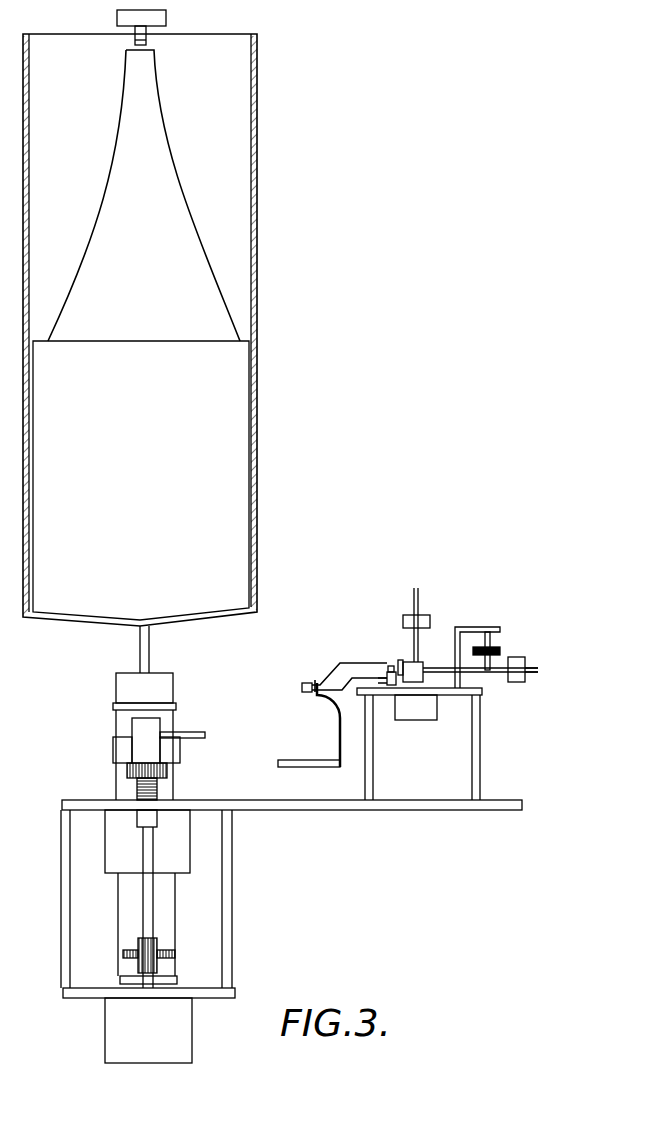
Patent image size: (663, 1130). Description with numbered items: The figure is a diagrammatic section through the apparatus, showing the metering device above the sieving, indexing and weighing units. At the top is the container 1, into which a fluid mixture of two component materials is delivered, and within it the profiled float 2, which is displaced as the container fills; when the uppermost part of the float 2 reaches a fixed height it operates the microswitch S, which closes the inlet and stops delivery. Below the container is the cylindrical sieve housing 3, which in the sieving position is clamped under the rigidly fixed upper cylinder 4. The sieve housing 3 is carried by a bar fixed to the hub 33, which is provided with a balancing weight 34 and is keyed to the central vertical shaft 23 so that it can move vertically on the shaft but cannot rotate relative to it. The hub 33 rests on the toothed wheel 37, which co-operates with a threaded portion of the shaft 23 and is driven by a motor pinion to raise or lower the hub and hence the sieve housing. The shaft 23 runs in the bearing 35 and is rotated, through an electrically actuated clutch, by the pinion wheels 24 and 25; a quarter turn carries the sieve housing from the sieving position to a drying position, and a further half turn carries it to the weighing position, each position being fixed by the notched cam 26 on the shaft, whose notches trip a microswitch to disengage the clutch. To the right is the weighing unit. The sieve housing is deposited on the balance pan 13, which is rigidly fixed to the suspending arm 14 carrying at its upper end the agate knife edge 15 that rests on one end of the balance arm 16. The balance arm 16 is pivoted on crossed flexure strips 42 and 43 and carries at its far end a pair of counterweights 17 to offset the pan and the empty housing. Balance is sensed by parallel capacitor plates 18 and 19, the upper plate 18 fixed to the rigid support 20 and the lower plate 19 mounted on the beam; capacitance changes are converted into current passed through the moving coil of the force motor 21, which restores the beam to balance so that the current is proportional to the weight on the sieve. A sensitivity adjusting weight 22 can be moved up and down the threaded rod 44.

The container 1 is at (258, 193).
The float 2 is at (168, 143).
The microswitch S is at (152, 37).
The upper cylinder 4 is at (125, 687).
The sieve housing 3 is at (170, 717).
The balancing weight 34 is at (140, 728).
The hub 33 is at (167, 748).
The toothed wheel 37 is at (125, 770).
The bearing 35 is at (137, 820).
The central vertical shaft 23 is at (150, 910).
The pinion wheel 24 is at (157, 943).
The pinion wheel 25 is at (173, 953).
The notched cam 26 is at (122, 982).
The balance pan 13 is at (293, 767).
The suspending arm 14 is at (340, 730).
The agate knife edge 15 is at (313, 683).
The balance arm 16 is at (346, 668).
The force motor 21 is at (427, 707).
The crossed flexure strip 42 is at (403, 665).
The crossed flexure strip 43 is at (391, 692).
The threaded rod 44 is at (415, 608).
The sensitivity adjusting weight 22 is at (425, 618).
The rigid support 20 is at (487, 627).
The upper capacitor plate 18 is at (495, 647).
The lower capacitor plate 19 is at (503, 655).
The counterweights 17 is at (515, 682).